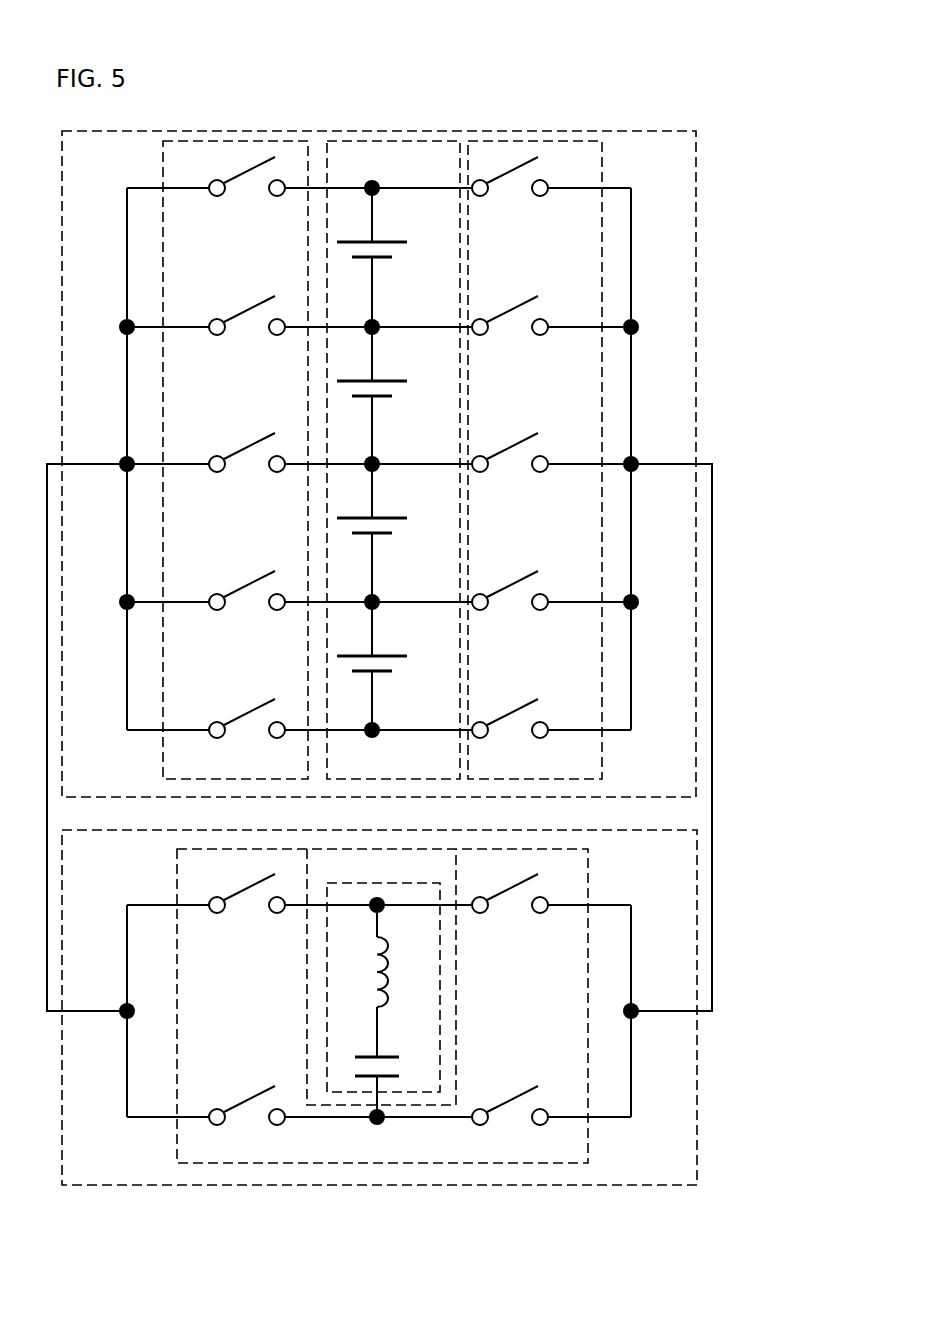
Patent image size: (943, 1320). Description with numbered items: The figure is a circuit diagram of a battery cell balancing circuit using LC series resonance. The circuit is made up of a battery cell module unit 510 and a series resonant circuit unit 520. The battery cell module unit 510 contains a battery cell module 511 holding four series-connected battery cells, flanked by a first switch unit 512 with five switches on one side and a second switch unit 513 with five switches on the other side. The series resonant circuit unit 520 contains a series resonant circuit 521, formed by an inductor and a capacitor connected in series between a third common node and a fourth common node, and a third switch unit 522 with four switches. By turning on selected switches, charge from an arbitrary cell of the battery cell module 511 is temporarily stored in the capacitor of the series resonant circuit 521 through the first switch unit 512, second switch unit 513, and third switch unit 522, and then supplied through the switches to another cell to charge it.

The battery cell module unit 510 is at (696, 188).
The battery cell module 511 is at (395, 141).
The first switch unit 512 is at (537, 141).
The second switch unit 513 is at (237, 141).
The series resonant circuit unit 520 is at (697, 1075).
The series resonant circuit 521 is at (407, 1092).
The third switch unit 522 is at (588, 868).